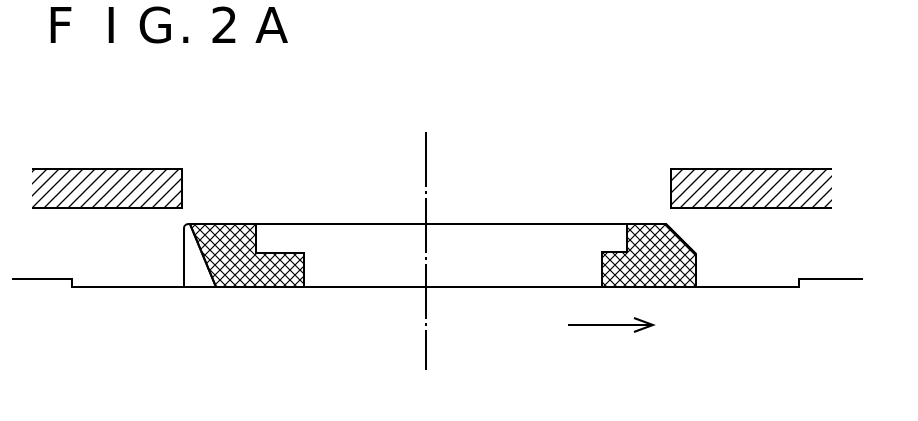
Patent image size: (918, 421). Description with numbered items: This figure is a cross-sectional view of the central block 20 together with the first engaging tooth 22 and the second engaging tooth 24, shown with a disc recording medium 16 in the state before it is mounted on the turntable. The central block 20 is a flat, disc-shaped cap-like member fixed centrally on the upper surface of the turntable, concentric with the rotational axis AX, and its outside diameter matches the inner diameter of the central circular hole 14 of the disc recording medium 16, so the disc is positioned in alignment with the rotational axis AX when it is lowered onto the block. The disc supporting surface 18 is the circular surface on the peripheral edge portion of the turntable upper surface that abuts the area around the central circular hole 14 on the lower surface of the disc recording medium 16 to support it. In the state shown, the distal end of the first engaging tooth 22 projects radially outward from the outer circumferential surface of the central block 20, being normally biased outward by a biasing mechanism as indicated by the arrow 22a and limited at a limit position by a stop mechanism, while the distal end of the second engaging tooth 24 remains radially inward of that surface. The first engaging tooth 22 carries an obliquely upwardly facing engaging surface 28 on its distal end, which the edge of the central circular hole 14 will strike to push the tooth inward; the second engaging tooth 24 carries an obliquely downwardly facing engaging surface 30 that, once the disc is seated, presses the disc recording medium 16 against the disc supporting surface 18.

The central circular hole 14 is at (432, 140).
The disc recording medium 16 is at (760, 163).
The disc supporting surface 18 is at (829, 278).
The central block 20 is at (345, 237).
The first engaging tooth 22 is at (674, 225).
The arrow 22a is at (602, 328).
The second engaging tooth 24 is at (242, 251).
The engaging surface 28 is at (679, 237).
The engaging surface 30 is at (205, 264).
The rotational axis AX is at (426, 157).